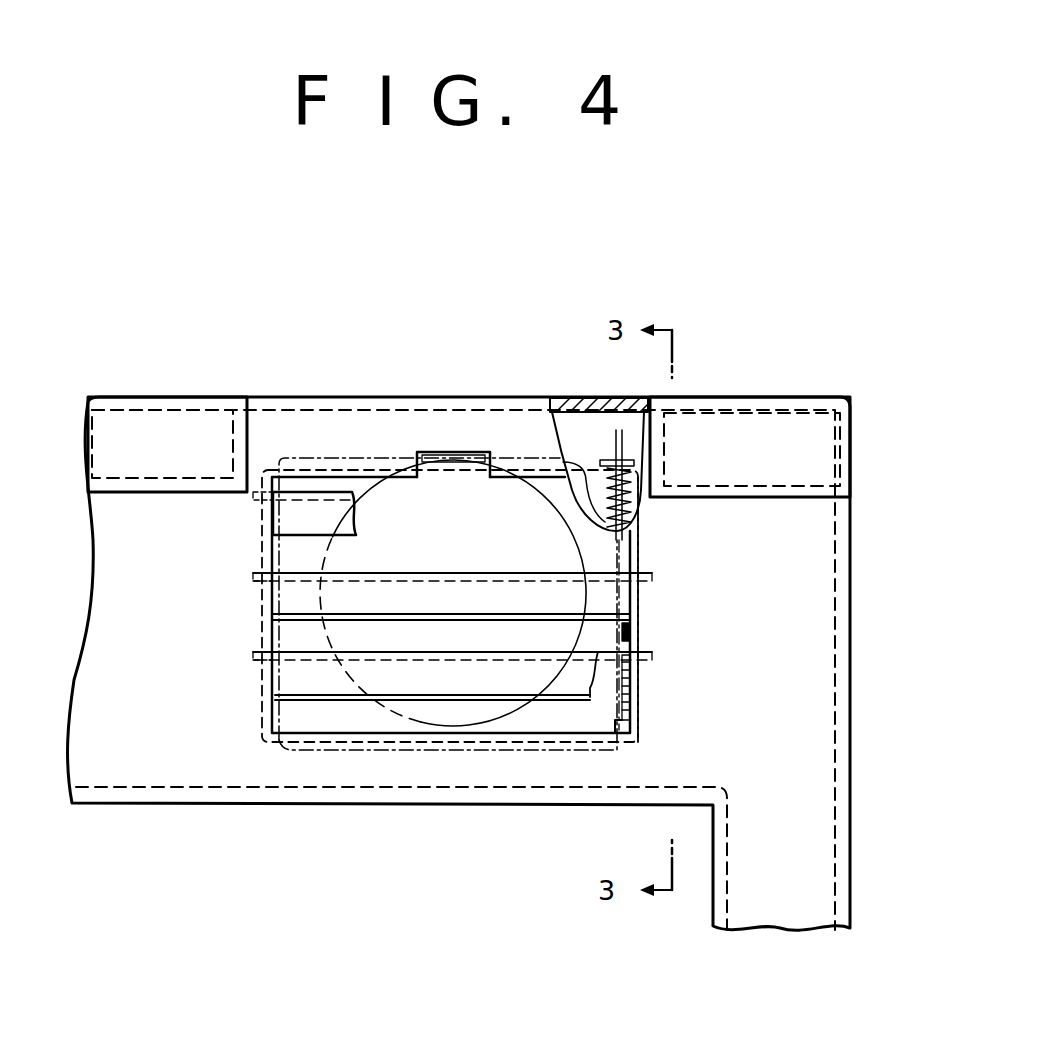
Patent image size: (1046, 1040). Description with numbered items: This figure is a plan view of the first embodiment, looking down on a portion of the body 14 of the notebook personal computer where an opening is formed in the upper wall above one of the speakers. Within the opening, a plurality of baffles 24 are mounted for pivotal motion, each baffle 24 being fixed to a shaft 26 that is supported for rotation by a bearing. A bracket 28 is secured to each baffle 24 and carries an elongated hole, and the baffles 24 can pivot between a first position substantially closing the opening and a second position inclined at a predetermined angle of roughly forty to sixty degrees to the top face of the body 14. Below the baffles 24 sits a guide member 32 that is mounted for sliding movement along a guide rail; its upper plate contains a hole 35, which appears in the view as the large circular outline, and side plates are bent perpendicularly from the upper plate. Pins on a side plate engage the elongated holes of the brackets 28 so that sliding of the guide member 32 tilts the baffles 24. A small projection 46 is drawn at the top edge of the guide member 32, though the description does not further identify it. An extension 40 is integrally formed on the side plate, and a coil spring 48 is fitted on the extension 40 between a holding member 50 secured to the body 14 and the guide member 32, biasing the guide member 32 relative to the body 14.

The body 14 is at (818, 640).
The baffle 24 is at (300, 517).
The shaft 26 is at (652, 577).
The bracket 28 is at (630, 624).
The guide member 32 is at (334, 756).
The hole 35 is at (452, 725).
The extension 40 is at (610, 440).
The projection 46 is at (447, 456).
The coil spring 48 is at (626, 502).
The holding member 50 is at (634, 463).